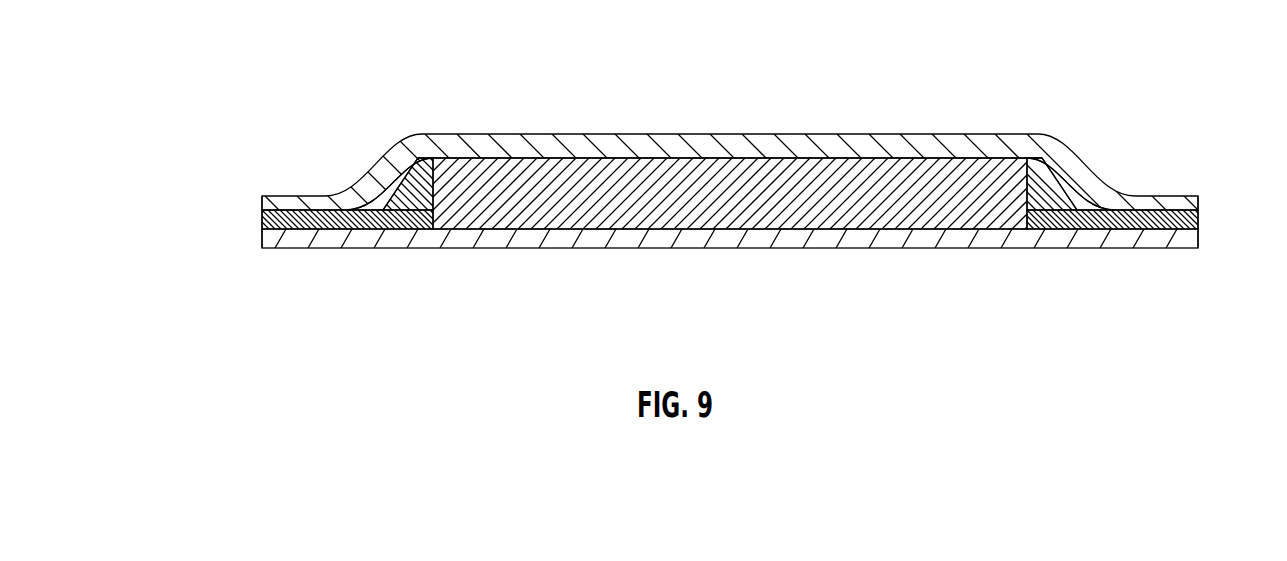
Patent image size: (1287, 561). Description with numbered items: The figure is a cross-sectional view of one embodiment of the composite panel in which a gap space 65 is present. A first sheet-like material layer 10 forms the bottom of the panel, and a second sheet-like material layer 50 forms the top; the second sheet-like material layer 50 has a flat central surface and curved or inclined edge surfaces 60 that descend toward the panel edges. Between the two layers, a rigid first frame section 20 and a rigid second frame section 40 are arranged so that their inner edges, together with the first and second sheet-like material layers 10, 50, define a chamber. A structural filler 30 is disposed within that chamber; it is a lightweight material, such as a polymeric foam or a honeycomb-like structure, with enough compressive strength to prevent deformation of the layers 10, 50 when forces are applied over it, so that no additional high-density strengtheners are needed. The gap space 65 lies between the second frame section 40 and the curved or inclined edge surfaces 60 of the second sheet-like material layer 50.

The first sheet-like material layer 10 is at (268, 240).
The first frame section 20 is at (263, 212).
The structural filler insert 30 is at (739, 205).
The second frame section 40 is at (430, 216).
The second sheet-like material layer 50 is at (728, 150).
The curved or inclined edge surfaces 60 is at (305, 176).
The gap space 65 is at (376, 193).